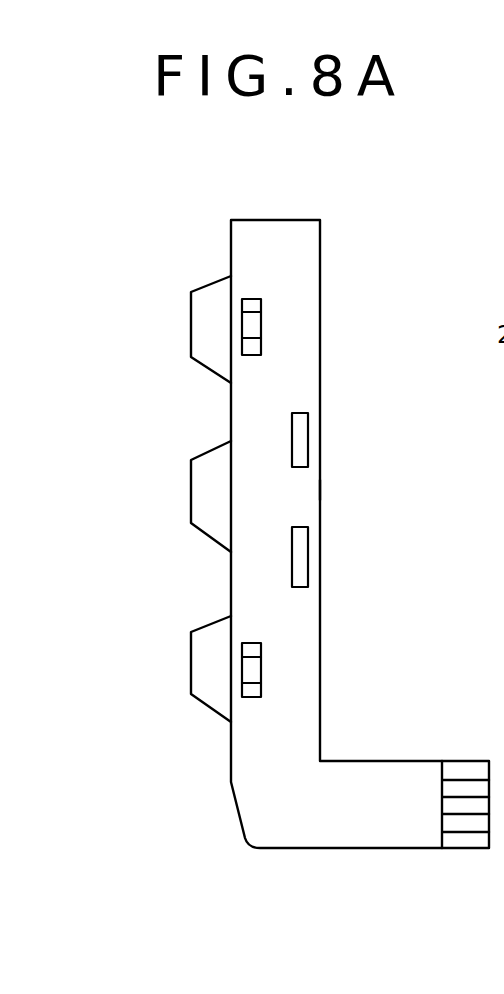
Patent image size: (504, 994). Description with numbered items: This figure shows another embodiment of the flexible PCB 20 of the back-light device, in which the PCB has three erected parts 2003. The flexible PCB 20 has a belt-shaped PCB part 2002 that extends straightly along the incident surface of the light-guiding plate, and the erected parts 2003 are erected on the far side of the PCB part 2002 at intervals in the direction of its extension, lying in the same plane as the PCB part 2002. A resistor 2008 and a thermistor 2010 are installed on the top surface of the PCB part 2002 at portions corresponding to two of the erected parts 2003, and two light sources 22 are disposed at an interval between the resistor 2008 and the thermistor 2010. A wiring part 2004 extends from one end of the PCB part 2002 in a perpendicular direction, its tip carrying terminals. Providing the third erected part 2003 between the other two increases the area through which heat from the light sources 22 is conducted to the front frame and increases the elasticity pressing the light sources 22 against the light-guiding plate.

The flexible PCB 20 is at (335, 209).
The light sources 22 is at (309, 437).
The PCB part 2002 is at (322, 492).
The erected parts 2003 is at (191, 329).
The wiring part 2004 is at (366, 851).
The resistor 2008 is at (262, 319).
The thermistor 2010 is at (262, 670).